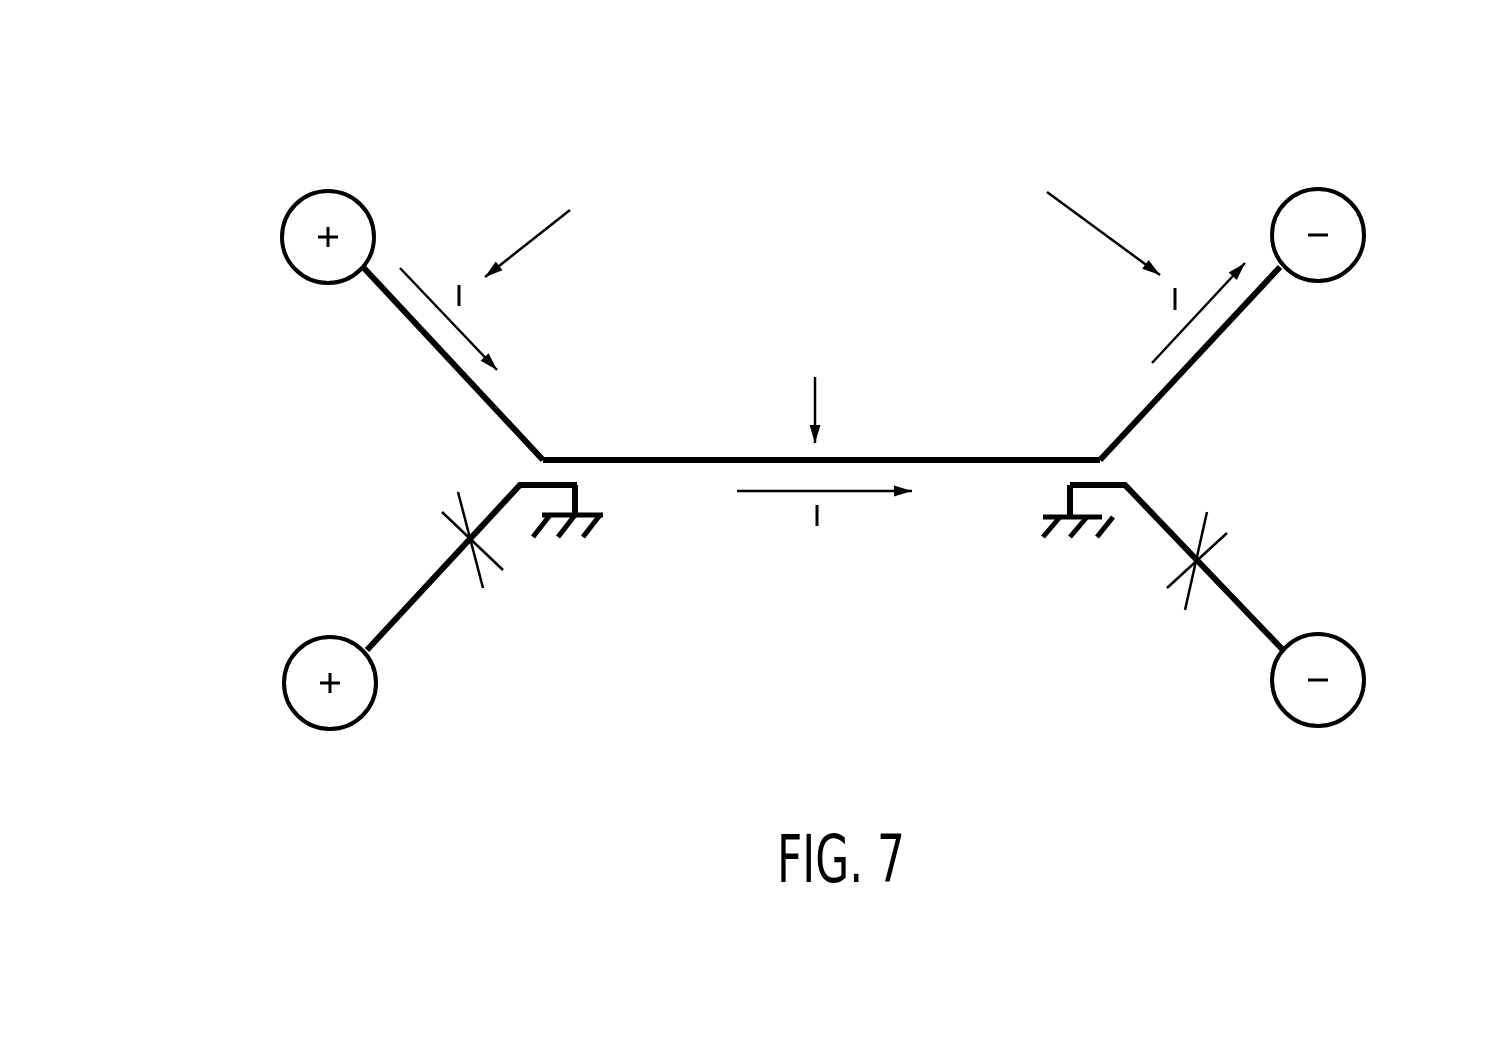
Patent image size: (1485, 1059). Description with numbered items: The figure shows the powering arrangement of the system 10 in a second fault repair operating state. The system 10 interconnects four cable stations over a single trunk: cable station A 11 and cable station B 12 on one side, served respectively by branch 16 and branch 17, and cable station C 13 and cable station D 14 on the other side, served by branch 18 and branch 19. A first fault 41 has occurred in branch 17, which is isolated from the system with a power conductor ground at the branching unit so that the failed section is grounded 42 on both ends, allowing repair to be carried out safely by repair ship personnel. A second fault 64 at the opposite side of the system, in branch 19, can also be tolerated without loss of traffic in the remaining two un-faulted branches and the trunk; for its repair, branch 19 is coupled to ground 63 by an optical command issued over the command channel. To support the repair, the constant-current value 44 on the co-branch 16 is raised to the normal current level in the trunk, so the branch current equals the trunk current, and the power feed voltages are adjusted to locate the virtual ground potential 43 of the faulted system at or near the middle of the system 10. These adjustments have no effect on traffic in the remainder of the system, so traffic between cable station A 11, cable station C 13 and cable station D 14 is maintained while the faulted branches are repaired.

The system 10 is at (848, 41).
The cable station A 11 is at (293, 267).
The cable station B 12 is at (295, 652).
The cable station C 13 is at (1353, 267).
The cable station D 14 is at (1365, 655).
The branch 16 is at (455, 367).
The branch 17 is at (403, 610).
The branch 18 is at (1190, 368).
The branch 19 is at (1150, 502).
The first fault 41 is at (498, 583).
The ground 42 is at (577, 497).
The virtual ground potential 43 is at (815, 403).
The constant-current value 44 is at (822, 304).
The ground 63 is at (1040, 527).
The second fault 64 is at (1240, 528).